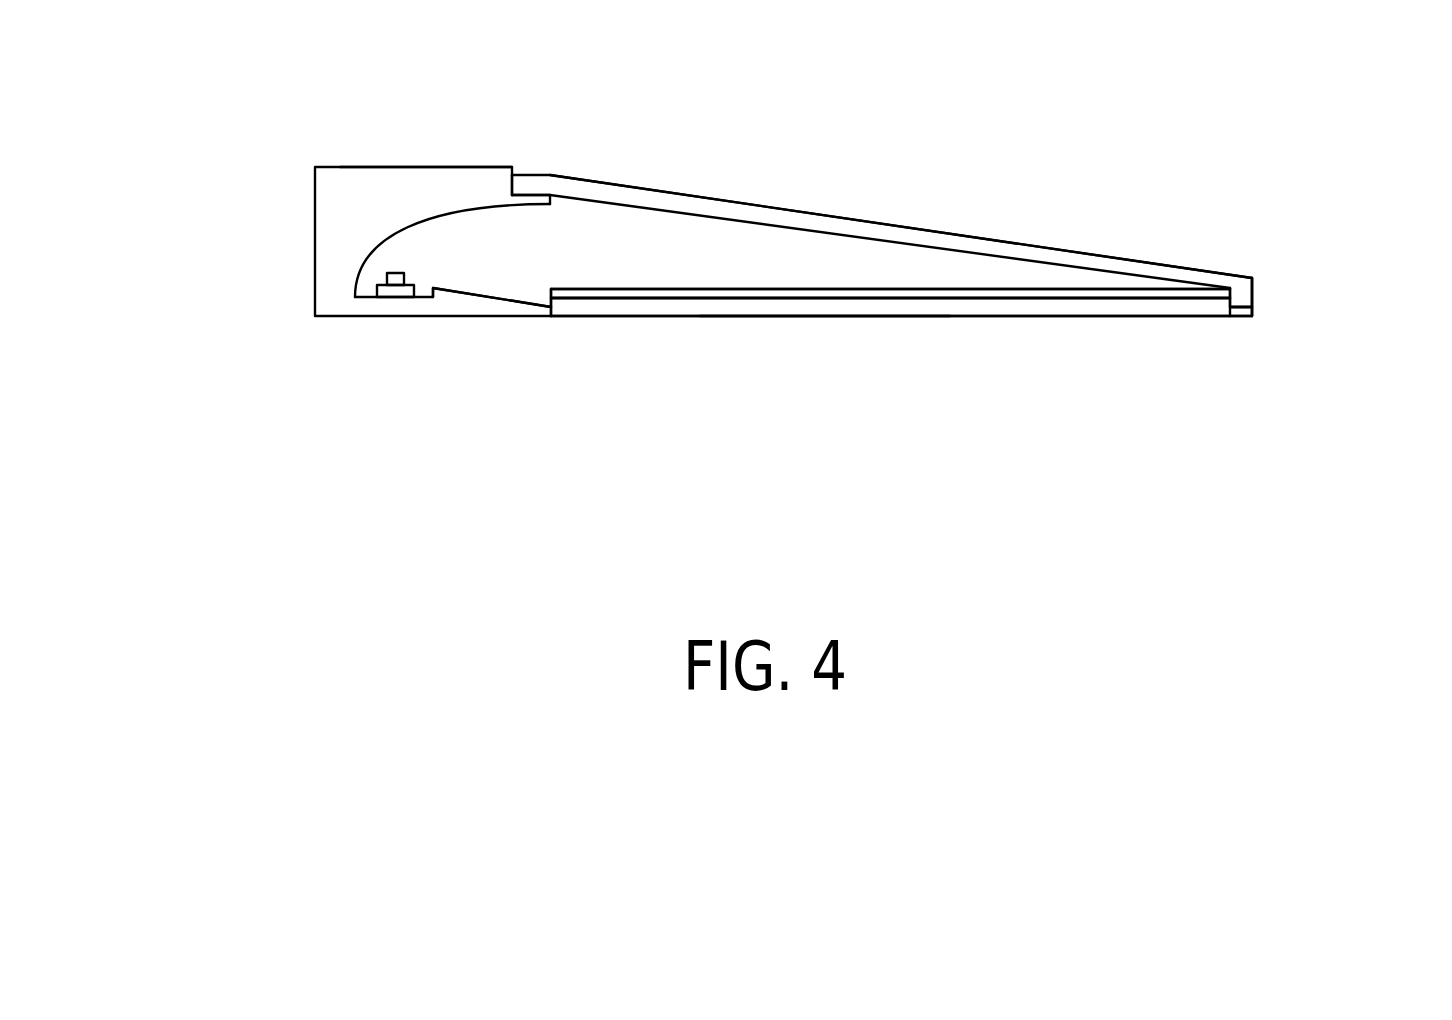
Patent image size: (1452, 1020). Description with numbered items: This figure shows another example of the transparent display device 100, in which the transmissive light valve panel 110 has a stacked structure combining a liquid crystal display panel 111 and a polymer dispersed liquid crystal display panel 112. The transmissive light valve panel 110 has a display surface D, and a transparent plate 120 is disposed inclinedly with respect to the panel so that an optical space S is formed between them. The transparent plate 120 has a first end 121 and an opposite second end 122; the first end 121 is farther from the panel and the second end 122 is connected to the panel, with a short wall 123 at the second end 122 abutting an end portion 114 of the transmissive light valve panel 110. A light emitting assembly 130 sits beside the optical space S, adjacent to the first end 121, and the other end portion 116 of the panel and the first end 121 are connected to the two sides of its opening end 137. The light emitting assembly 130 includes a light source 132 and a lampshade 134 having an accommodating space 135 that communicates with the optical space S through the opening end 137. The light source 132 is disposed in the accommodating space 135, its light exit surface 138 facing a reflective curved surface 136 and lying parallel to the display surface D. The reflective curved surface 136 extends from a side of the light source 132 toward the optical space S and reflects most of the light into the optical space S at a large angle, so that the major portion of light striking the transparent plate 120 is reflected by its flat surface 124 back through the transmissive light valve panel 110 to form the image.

The transparent display device 100 is at (1225, 98).
The transmissive light valve panel 110 is at (1200, 430).
The liquid crystal display panel 111 is at (1123, 308).
The polymer dispersed liquid crystal display panel 112 is at (1157, 295).
The end portion 114 is at (1225, 310).
The end portion 116 is at (552, 303).
The transparent plate 120 is at (767, 220).
The first end 121 is at (517, 182).
The second end 122 is at (1253, 293).
The short wall 123 is at (1242, 295).
The flat surface 124 is at (995, 245).
The light emitting assembly 130 is at (288, 212).
The light source 132 is at (387, 298).
The lampshade 134 is at (423, 177).
The accommodating space 135 is at (465, 257).
The reflective curved surface 136 is at (383, 240).
The opening end 137 is at (553, 262).
The light exit surface 138 is at (418, 278).
The optical space S is at (630, 262).
The display surface D is at (822, 310).